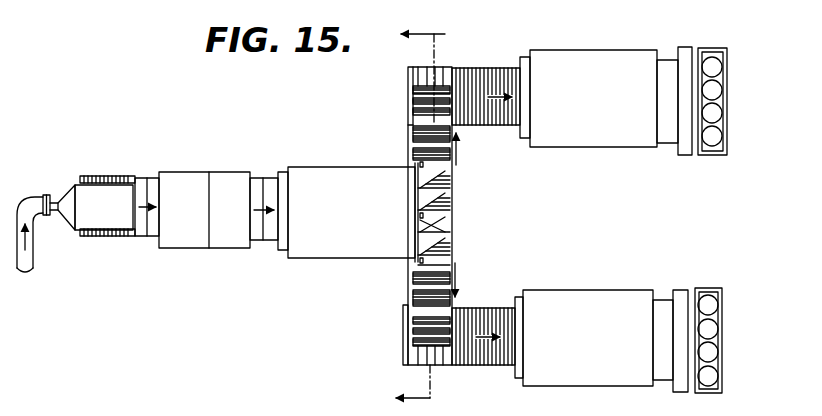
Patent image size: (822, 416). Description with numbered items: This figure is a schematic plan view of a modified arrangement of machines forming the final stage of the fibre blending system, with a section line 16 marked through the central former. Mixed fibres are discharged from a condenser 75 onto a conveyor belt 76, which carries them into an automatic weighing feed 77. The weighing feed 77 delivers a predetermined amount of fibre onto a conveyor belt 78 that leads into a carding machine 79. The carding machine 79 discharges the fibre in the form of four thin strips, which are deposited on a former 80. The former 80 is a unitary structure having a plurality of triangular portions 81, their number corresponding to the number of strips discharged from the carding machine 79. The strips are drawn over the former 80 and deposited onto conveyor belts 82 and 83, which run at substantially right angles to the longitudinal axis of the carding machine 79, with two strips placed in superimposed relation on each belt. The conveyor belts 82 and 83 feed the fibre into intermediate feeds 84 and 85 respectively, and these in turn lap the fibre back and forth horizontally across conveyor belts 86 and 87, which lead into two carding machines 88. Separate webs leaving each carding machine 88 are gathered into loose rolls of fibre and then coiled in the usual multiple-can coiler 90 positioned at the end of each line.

The section line 16- 16 is at (442, 214).
The condenser 75 is at (100, 188).
The conveyor belt 76 is at (137, 237).
The automatic weighing feed 77 is at (204, 192).
The conveyor belt 78 is at (265, 241).
The carding machine 79 is at (342, 173).
The former 80 is at (501, 233).
The triangular portions 81 is at (446, 253).
The conveyor belt 82 is at (452, 264).
The conveyor belt 83 is at (452, 183).
The intermediate feed 84 is at (413, 332).
The intermediate feed 85 is at (417, 92).
The conveyor belt 86 is at (483, 363).
The conveyor belt 87 is at (495, 72).
The carding machine 88 is at (597, 146).
The multiple-can coiler 90 is at (727, 100).